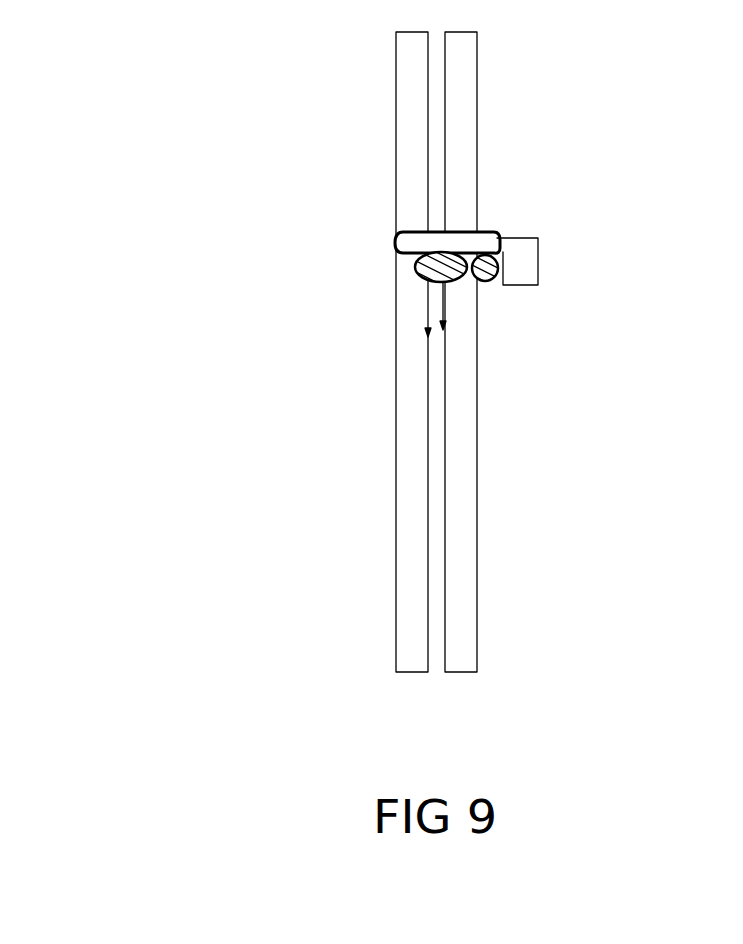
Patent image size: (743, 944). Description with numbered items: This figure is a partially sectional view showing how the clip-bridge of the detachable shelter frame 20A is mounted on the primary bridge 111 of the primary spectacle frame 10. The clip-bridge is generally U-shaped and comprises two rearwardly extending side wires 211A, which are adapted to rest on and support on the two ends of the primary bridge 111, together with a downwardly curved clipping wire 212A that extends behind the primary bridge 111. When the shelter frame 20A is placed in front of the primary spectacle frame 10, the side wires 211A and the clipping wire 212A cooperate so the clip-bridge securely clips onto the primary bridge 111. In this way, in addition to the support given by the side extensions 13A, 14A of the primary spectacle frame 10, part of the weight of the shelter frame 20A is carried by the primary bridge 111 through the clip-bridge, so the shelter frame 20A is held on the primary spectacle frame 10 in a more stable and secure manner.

The shelter frame 20A is at (372, 517).
The primary spectacle frame 10 is at (522, 575).
The side wire 211A is at (450, 242).
The side extension 13A is at (582, 218).
The side extension 14A is at (495, 245).
The clipping wire 212A is at (498, 262).
The primary bridge 111 is at (447, 285).